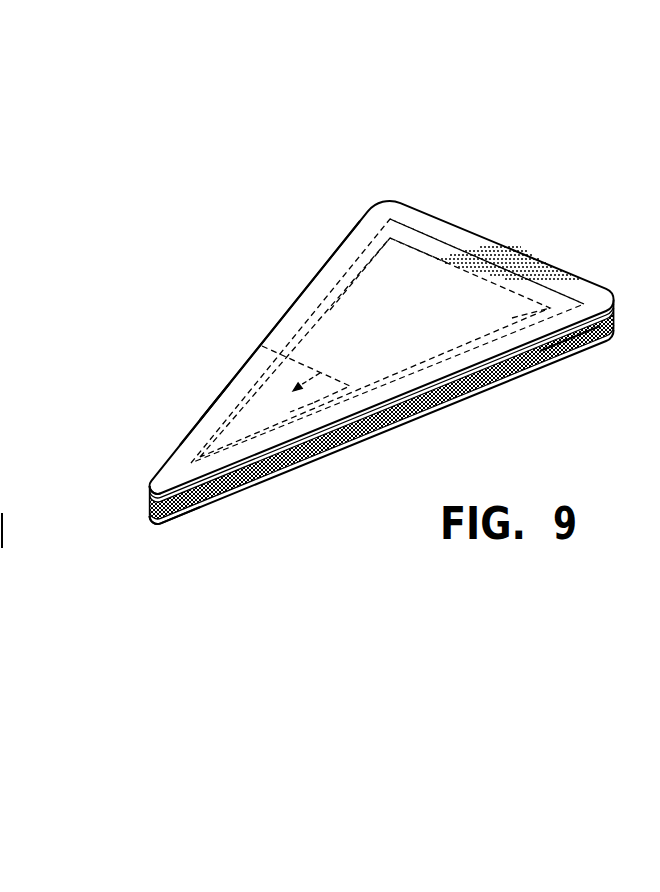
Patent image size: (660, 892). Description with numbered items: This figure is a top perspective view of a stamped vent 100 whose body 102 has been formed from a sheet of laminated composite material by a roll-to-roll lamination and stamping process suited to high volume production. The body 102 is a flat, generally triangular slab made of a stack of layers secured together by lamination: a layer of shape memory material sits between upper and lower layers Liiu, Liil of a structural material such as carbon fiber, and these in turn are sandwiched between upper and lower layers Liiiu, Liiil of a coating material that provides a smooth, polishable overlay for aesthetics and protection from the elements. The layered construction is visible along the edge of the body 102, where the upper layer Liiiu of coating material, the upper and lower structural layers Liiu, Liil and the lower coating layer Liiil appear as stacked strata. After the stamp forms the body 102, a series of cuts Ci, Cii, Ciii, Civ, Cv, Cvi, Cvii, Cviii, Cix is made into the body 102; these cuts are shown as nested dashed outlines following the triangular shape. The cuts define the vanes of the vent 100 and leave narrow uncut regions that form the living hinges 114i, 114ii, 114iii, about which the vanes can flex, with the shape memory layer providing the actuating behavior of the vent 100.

The vent 100 is at (460, 178).
The body 102 is at (332, 254).
The living hinge 114i is at (318, 405).
The living hinge 114ii is at (512, 318).
The living hinge 114iii is at (490, 294).
The cut Ci is at (268, 357).
The cut Cii is at (360, 438).
The cut Ciii is at (306, 362).
The cut Civ is at (322, 316).
The cut Cv is at (437, 410).
The cut Cvi is at (379, 345).
The cut Cvii is at (378, 242).
The cut Cviii is at (548, 368).
The cut Cix is at (450, 232).
The upper layer of coating material Liiiu is at (212, 430).
The upper layer of structural material Liiu is at (152, 498).
The lower layer of structural material Liil is at (153, 500).
The lower layer of coating material Liiil is at (184, 510).